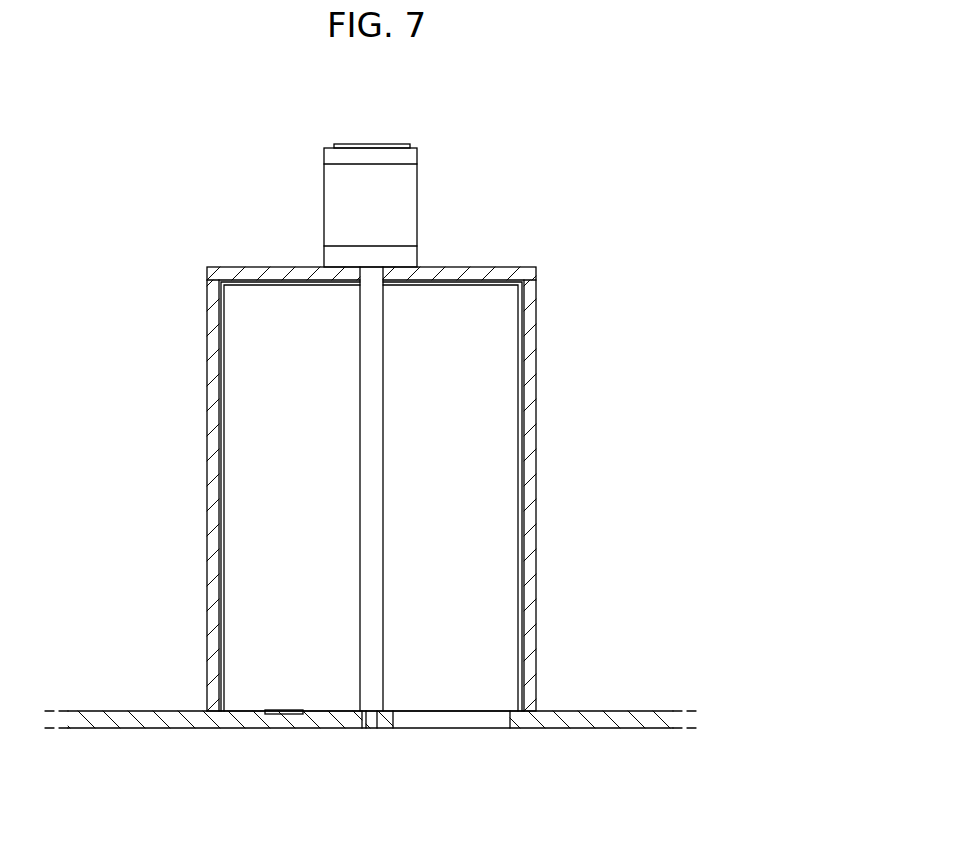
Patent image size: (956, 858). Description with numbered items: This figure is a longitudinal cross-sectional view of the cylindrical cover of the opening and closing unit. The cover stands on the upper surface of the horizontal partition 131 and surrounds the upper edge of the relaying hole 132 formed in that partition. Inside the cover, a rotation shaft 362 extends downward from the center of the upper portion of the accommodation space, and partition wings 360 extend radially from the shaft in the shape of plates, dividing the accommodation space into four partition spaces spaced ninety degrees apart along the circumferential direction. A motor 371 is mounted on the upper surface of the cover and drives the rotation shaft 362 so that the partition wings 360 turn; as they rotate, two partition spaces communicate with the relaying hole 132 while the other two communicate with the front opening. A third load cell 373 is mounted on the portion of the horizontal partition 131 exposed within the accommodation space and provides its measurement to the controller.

The horizontal partition 131 is at (135, 718).
The relaying hole 132 is at (443, 718).
The partition wings 360 is at (472, 512).
The rotation shaft 362 is at (372, 389).
The motor 371 is at (408, 185).
The third load cell 373 is at (283, 714).